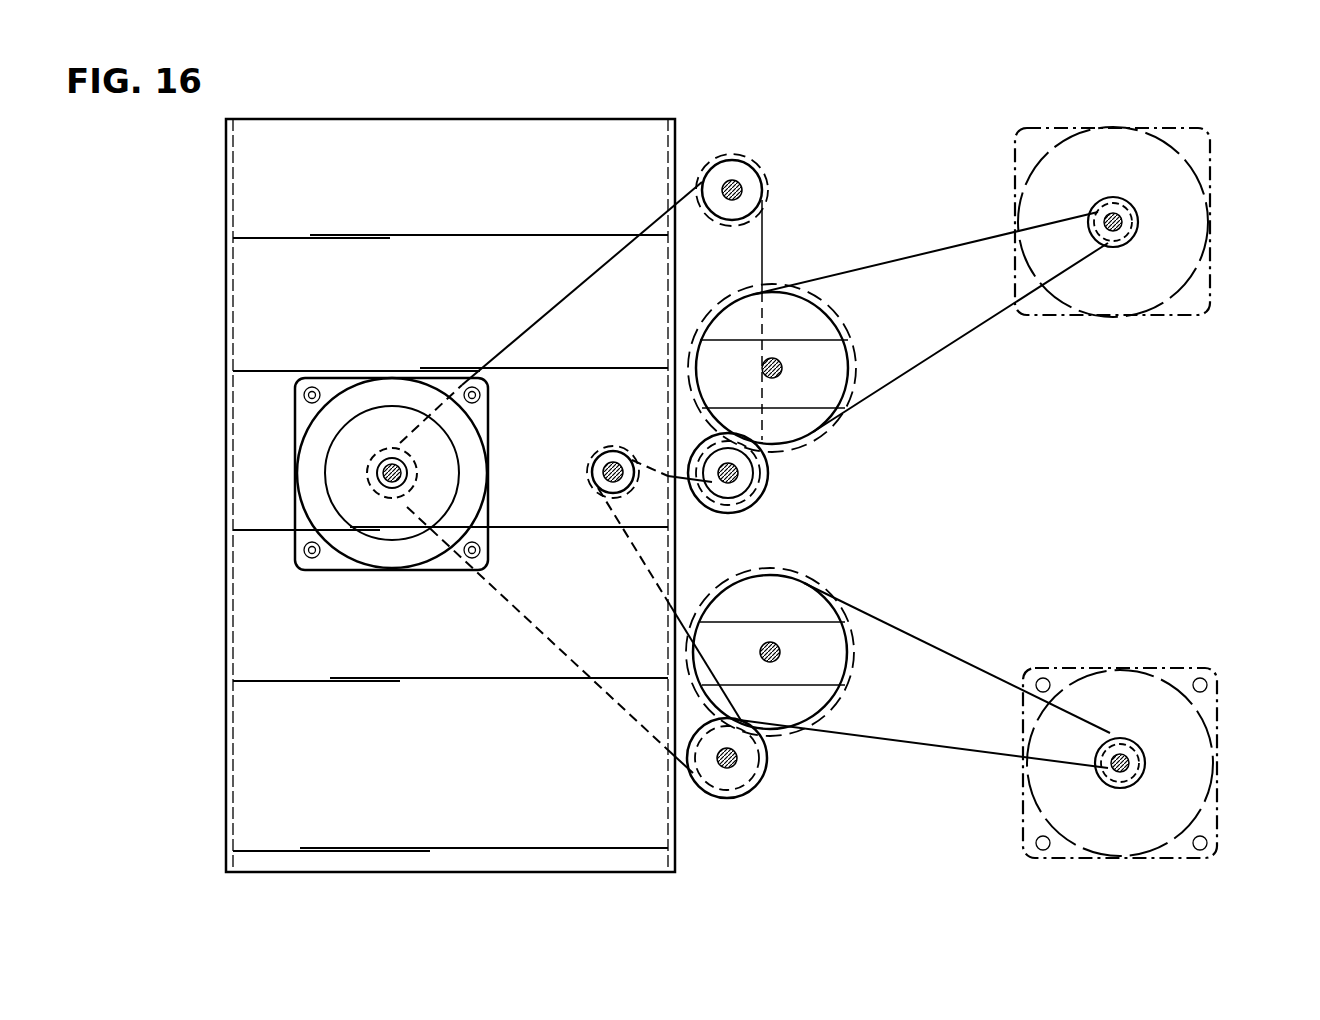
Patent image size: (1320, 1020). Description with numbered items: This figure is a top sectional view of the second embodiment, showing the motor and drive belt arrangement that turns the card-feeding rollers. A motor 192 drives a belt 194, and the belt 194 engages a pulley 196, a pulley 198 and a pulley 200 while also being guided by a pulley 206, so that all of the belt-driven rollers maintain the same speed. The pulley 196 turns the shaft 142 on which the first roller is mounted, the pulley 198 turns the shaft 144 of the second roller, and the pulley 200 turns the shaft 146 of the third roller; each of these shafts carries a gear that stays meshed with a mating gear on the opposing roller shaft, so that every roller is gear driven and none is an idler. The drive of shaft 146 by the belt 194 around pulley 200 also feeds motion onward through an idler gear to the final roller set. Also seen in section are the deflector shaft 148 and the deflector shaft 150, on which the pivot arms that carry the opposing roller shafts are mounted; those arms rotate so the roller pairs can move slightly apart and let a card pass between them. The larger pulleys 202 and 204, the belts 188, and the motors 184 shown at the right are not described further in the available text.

The shaft 142 is at (742, 190).
The shaft 144 is at (740, 475).
The shaft 146 is at (720, 758).
The deflector shaft 148 is at (780, 362).
The deflector shaft 150 is at (778, 648).
The motor 184 is at (1208, 150).
The belt 188 is at (925, 362).
The motor 192 is at (405, 378).
The belt 194 is at (568, 292).
The pulley 196 is at (752, 170).
The pulley 198 is at (745, 487).
The pulley 200 is at (750, 780).
The pulley 202 is at (768, 292).
The pulley 204 is at (780, 598).
The pulley 206 is at (592, 480).